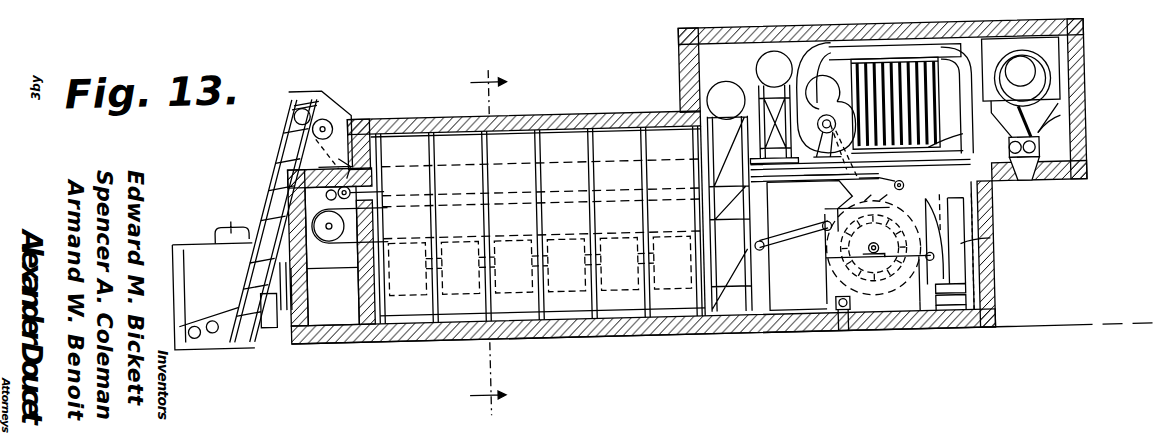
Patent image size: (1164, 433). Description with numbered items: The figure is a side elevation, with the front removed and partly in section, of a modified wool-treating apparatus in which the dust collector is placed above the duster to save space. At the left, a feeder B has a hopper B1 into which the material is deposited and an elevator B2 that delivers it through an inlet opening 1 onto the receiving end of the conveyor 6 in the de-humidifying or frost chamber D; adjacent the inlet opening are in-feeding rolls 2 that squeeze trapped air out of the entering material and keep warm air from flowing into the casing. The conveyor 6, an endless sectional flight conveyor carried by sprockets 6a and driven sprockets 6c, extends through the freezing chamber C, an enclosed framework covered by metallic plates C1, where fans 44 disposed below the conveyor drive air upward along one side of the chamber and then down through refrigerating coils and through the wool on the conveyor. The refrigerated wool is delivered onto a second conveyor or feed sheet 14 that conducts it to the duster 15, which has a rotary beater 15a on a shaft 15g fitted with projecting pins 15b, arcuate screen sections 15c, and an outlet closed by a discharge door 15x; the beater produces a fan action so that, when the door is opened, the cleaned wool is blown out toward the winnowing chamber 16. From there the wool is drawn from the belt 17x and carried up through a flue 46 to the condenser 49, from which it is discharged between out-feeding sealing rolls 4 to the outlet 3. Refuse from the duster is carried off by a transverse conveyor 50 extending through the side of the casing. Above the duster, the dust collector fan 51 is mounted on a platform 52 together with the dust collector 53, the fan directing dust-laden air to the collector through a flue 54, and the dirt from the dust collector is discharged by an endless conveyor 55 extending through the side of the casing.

The feeder B is at (265, 183).
The hopper B1 is at (190, 235).
The elevator B2 is at (282, 143).
The freezing chamber C is at (618, 282).
The metallic plates C1 is at (450, 137).
The de-humidifying chamber D is at (332, 255).
The inlet opening 1 is at (343, 165).
The in-feeding rolls 2 is at (351, 186).
The outlet 3 is at (1041, 155).
The out-feeding sealing rolls 4 is at (1035, 141).
The conveyor 6 is at (462, 200).
The sprockets 6a is at (335, 219).
The sprockets 6c is at (752, 208).
The conveyor 14 is at (853, 200).
The duster 15 is at (833, 273).
The rotary beater 15a is at (922, 216).
The projecting pins 15b is at (900, 184).
The arcuate screen sections 15c is at (838, 285).
The shaft 15g is at (840, 245).
The discharge door 15x is at (913, 305).
The winnowing chamber 16 is at (958, 262).
The belt 17x is at (956, 307).
The fans 44 is at (410, 290).
The flue 46 is at (978, 255).
The condenser 49 is at (1034, 50).
The conveyor 50 is at (846, 307).
The dust collector fan 51 is at (831, 112).
The platform 52 is at (804, 176).
The dust collector 53 is at (922, 62).
The flue 54 is at (860, 52).
The endless conveyor 55 is at (930, 158).